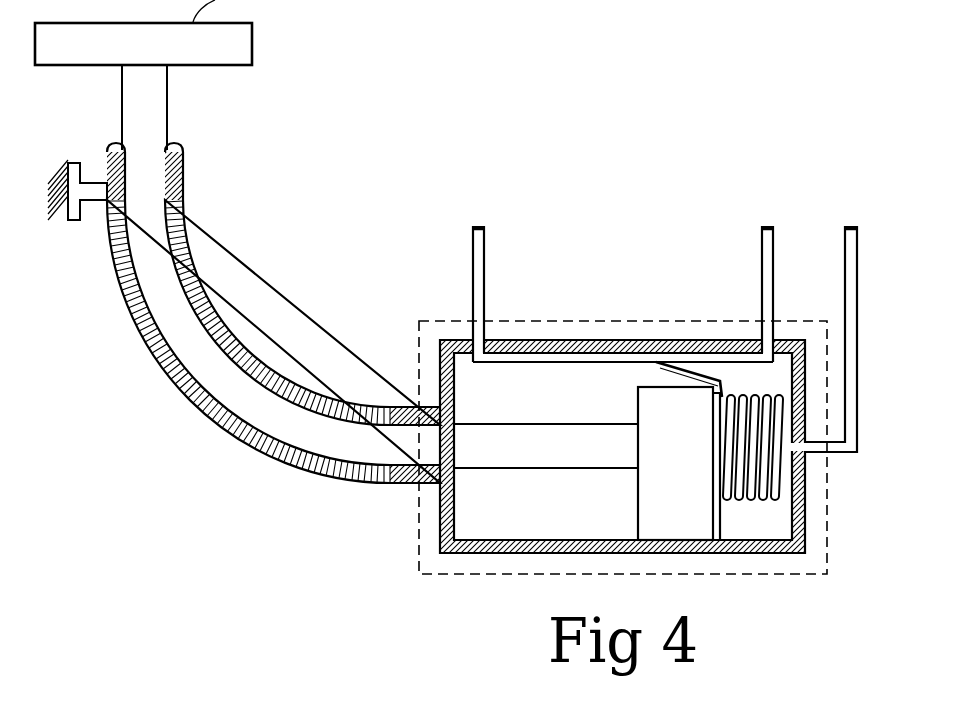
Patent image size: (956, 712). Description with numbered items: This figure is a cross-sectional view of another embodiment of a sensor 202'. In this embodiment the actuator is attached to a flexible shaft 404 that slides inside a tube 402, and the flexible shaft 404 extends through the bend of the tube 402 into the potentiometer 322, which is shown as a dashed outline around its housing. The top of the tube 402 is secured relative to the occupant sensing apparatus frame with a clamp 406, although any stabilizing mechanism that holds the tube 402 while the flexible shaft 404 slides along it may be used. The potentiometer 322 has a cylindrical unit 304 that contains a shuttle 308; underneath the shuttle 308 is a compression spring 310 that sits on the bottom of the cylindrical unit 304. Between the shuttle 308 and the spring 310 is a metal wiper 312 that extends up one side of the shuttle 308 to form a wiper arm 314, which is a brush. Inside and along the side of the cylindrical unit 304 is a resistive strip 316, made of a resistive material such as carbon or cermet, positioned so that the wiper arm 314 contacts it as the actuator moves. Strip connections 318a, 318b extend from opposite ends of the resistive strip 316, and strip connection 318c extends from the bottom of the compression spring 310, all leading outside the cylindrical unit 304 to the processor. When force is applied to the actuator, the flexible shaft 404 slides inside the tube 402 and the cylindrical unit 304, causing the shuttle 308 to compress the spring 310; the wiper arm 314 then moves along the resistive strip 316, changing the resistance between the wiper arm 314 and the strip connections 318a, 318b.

The sensor 202' is at (409, 101).
The cylindrical unit 304 is at (478, 553).
The shuttle 308 is at (688, 520).
The compression spring 310 is at (765, 500).
The metal wiper 312 is at (722, 392).
The wiper arm 314 is at (688, 372).
The resistive strip 316 is at (580, 360).
The strip connection 318a is at (477, 226).
The strip connection 318b is at (766, 226).
The strip connection 318c is at (850, 226).
The potentiometer 322 is at (518, 320).
The tube 402 is at (137, 316).
The flexible shaft 404 is at (158, 268).
The clamp 406 is at (78, 163).